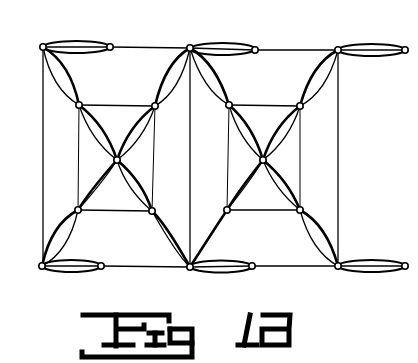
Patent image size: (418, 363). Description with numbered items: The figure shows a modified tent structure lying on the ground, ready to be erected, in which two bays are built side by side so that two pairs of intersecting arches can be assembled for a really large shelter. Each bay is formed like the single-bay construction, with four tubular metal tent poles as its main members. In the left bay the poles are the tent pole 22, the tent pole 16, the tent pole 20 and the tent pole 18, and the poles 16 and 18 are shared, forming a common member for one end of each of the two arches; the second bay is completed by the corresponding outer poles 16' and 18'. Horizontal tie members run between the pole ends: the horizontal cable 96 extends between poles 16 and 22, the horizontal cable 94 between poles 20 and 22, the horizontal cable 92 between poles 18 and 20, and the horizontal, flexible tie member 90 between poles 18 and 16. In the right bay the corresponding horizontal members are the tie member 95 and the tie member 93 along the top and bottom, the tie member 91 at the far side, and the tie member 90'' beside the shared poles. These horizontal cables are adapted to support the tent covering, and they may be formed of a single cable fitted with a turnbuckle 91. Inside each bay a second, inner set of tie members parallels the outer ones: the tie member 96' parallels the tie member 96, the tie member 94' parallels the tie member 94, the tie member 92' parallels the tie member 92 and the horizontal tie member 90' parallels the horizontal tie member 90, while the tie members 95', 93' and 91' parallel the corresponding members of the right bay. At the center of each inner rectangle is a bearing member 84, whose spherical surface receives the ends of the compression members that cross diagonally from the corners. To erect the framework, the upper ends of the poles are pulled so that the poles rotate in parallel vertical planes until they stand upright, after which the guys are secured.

The tent pole 22 is at (80, 44).
The horizontal cable 96 is at (150, 31).
The tent pole 16 is at (223, 33).
The horizontal strut 95 is at (296, 31).
The tubular member 16' is at (372, 34).
The tie member 96' is at (117, 90).
The inner horizontal strut 95' is at (264, 90).
The horizontal cable 94 is at (25, 156).
The tie member 94' is at (64, 157).
The horizontal tie member 90' is at (168, 158).
The horizontal flexible tie member 90 is at (204, 157).
The inner vertical strut 90'' is at (214, 157).
The inner vertical strut 91' is at (316, 158).
The turnbuckle 91 is at (359, 158).
The bearing member 84 is at (114, 160).
The tie member 92' is at (115, 224).
The horizontal cable 92 is at (145, 252).
The tent pole 20 is at (72, 274).
The tent pole 18 is at (222, 281).
The horizontal strut 93 is at (295, 252).
The inner horizontal strut 93' is at (263, 224).
The tubular member 18' is at (371, 284).